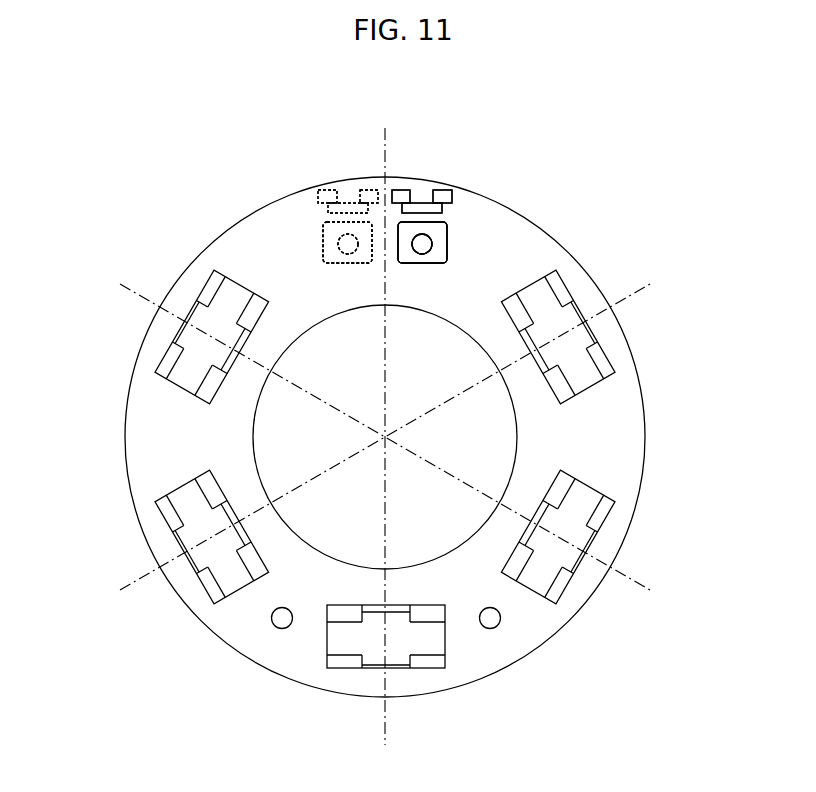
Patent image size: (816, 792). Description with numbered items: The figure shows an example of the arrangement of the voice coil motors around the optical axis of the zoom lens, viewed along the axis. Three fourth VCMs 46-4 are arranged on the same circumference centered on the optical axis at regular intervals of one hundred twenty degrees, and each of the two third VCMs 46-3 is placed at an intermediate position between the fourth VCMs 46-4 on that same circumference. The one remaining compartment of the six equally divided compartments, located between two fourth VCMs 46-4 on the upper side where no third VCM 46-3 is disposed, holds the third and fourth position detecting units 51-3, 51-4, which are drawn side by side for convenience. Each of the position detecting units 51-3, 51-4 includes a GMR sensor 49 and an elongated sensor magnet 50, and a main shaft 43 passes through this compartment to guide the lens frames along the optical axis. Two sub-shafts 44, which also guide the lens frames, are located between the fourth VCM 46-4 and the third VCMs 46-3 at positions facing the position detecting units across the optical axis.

The main shaft 43 is at (325, 245).
The sub-shaft 44 is at (277, 628).
The third VCM 46-3 is at (177, 587).
The fourth VCM 46-4 is at (178, 292).
The GMR sensor 49 is at (370, 200).
The sensor magnet 50 is at (327, 237).
The third position detecting unit 51-3 is at (500, 115).
The fourth position detecting unit 51-4 is at (355, 115).